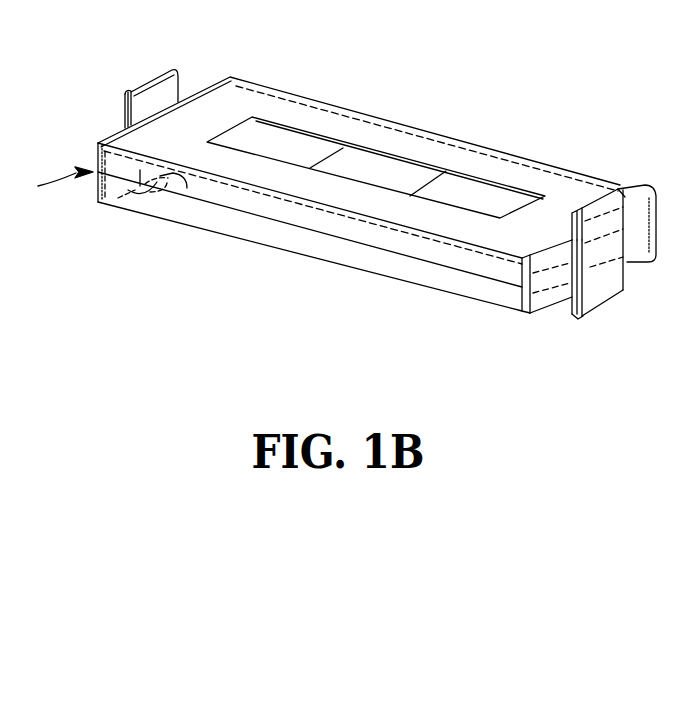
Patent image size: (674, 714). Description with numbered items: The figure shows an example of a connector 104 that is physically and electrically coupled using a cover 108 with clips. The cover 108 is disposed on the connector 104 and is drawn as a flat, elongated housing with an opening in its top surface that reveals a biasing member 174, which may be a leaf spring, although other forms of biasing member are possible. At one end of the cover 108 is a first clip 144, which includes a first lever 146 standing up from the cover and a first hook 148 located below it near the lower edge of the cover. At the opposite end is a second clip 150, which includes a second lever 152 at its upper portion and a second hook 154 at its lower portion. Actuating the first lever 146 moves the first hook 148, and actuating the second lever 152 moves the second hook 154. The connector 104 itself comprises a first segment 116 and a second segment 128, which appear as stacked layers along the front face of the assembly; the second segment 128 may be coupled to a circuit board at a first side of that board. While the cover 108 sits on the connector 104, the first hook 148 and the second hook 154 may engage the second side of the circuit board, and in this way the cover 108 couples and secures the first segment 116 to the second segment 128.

The connector 104 is at (47, 181).
The cover 108 is at (528, 126).
The first segment 116 is at (483, 270).
The second segment 128 is at (395, 273).
The first clip 144 is at (124, 109).
The first lever 146 is at (170, 83).
The first hook 148 is at (128, 200).
The second clip 150 is at (619, 255).
The second lever 152 is at (612, 194).
The second hook 154 is at (583, 320).
The biasing member 174 is at (367, 158).